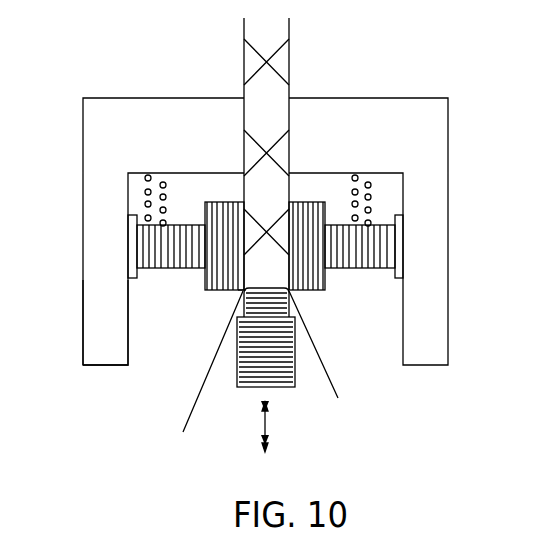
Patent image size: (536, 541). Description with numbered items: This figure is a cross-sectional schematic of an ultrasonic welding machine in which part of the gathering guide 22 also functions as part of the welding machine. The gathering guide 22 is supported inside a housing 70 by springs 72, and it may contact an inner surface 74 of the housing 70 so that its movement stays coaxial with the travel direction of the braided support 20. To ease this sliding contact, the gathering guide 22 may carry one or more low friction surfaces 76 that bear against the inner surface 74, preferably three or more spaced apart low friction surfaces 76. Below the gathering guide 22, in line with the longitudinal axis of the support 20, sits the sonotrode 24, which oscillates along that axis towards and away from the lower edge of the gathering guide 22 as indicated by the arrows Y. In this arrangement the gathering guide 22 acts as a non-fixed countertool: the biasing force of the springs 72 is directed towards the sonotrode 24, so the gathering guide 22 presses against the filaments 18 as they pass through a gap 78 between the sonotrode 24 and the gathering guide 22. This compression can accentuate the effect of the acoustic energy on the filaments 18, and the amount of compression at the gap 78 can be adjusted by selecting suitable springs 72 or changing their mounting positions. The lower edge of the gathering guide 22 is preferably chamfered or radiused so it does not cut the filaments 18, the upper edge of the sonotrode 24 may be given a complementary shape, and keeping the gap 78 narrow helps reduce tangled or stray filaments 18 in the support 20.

The filaments 18 is at (192, 409).
The braided support 20 is at (301, 57).
The gathering guide 22 is at (329, 291).
The sonotrode 24 is at (300, 388).
The housing 70 is at (433, 142).
The springs 72 is at (145, 186).
The inner surface 74 is at (133, 316).
The low friction surfaces 76 is at (128, 247).
The gap 78 is at (240, 294).
The arrows Y is at (258, 424).